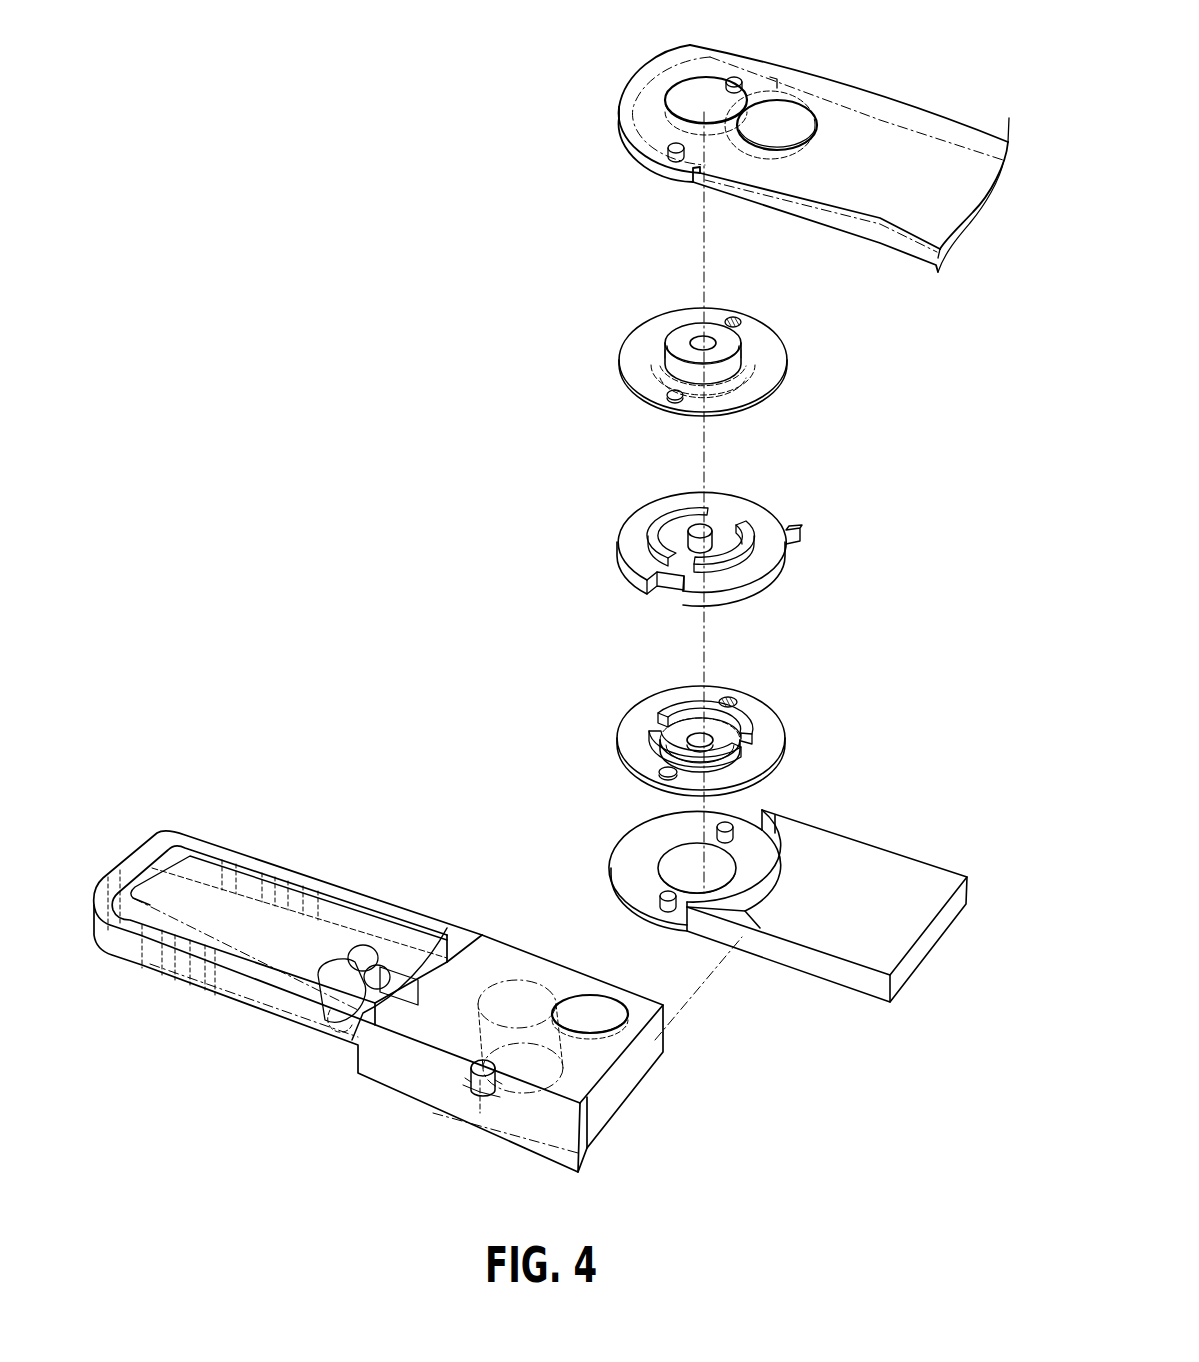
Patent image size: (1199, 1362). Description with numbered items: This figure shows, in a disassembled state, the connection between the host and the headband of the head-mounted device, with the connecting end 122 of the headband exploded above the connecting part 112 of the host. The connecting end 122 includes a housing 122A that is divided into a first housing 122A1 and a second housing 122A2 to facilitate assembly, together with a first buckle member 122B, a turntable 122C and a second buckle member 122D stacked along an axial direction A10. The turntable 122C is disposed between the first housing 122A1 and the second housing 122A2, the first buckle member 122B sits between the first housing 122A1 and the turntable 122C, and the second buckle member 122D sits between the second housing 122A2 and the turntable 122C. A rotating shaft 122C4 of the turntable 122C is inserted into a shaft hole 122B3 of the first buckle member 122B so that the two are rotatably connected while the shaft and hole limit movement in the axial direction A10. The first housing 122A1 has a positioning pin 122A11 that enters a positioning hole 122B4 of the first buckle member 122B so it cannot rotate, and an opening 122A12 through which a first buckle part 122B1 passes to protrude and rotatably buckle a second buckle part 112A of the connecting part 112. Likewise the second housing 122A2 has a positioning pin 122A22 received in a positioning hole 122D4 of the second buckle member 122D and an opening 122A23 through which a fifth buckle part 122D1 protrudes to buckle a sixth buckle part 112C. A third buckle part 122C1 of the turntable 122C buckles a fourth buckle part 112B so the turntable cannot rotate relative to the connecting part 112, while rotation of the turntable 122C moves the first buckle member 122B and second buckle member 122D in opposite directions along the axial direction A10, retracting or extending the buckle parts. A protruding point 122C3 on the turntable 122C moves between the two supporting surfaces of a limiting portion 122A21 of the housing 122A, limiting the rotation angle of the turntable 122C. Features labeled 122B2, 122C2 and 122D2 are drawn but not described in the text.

The connecting end 122 is at (490, 4).
The axial direction A10 is at (702, 252).
The housing 122A is at (898, 243).
The first housing 122A1 is at (787, 304).
The positioning pin 122A11 is at (743, 74).
The opening 122A12 is at (693, 74).
The second housing 122A2 is at (746, 826).
The limiting portion 122A21 is at (784, 838).
The positioning pin 122A22 is at (660, 892).
The opening 122A23 is at (658, 848).
The first buckle member 122B is at (650, 353).
The first buckle part 122B1 is at (727, 344).
The rib 122B2 is at (732, 392).
The shaft hole 122B3 is at (695, 338).
The positioning hole 122B4 is at (741, 318).
The turntable 122C is at (630, 548).
The third buckle part 122C1 is at (664, 607).
The arc wall gap 122C2 is at (753, 524).
The protruding point 122C3 is at (800, 529).
The rotating shaft 122C4 is at (696, 525).
The second buckle member 122D is at (634, 724).
The fifth buckle part 122D1 is at (720, 750).
The arc wall 122D2 is at (752, 734).
The positioning hole 122D4 is at (737, 701).
The connecting part 112 is at (383, 1073).
The second buckle part 112A is at (544, 980).
The fourth buckle part 112B is at (493, 1062).
The sixth buckle part 112C is at (510, 1100).